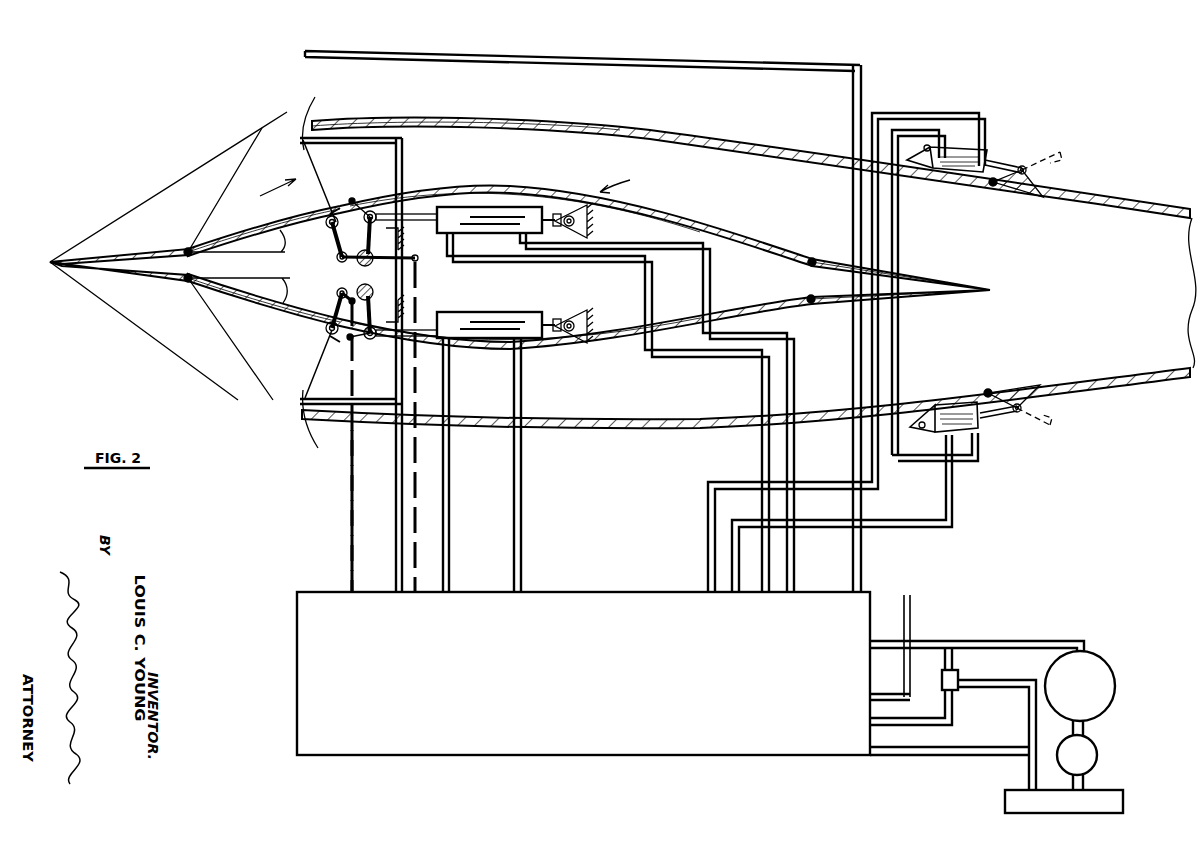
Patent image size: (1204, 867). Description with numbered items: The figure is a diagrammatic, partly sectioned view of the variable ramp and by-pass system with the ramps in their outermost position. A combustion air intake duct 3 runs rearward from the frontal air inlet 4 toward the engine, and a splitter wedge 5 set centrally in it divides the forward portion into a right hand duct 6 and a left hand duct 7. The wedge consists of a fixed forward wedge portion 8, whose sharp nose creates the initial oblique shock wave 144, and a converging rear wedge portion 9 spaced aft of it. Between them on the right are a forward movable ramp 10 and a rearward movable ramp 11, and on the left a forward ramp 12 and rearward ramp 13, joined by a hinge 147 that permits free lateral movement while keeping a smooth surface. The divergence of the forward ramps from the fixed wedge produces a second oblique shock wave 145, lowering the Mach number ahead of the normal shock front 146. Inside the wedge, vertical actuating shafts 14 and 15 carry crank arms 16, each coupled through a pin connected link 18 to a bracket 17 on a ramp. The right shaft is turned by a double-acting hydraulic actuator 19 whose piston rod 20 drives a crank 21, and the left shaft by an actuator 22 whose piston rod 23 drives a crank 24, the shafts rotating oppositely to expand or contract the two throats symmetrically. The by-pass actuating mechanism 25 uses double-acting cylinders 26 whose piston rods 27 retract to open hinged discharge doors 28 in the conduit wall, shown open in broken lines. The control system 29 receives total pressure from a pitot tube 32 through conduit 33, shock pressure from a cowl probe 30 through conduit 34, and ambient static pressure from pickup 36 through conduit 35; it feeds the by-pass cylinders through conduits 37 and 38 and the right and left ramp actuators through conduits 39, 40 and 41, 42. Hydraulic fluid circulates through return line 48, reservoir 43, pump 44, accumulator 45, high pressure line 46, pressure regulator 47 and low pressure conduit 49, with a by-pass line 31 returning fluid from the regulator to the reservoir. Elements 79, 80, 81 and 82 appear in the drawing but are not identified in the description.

The combustion air intake duct 3 is at (745, 136).
The frontal air inlet 4 is at (281, 272).
The splitter wedge 5 is at (589, 255).
The right hand duct 6 is at (545, 160).
The left hand duct 7 is at (595, 408).
The fixed forward wedge portion 8 is at (138, 256).
The rear wedge portion 9 is at (948, 296).
The forward movable right ramp portion 10 is at (282, 229).
The rearward movable right ramp portion 11 is at (628, 217).
The forward movable left ramp portion 12 is at (240, 303).
The rearward movable left ramp portion 13 is at (606, 347).
The right ramp actuating shaft 14 is at (362, 248).
The left ramp actuating shaft 15 is at (400, 292).
The crank arm 16 is at (345, 265).
The bracket 17 is at (326, 228).
The pin connected link 18 is at (338, 238).
The right double-acting hydraulic actuator 19 is at (487, 231).
The piston rod 20 is at (396, 232).
The crank 21 is at (400, 246).
The left double-acting hydraulic actuator 22 is at (497, 317).
The piston rod 23 is at (425, 328).
The crank 24 is at (364, 340).
The by-pass actuating mechanism 25 is at (995, 270).
The double-acting cylinders 26 is at (958, 175).
The piston rods 27 is at (1001, 161).
The discharge doors 28 is at (1034, 199).
The control system 29 is at (556, 603).
The shock sensing probe 30 is at (300, 143).
The by-pass line 31 is at (1028, 713).
The pitot tube 32 is at (309, 51).
The pneumatic sensing conduit 33 is at (613, 58).
The pneumatic sensing conduit 34 is at (396, 530).
The pneumatic sensing conduit 35 is at (906, 672).
The ambient static pressure pickup 36 is at (912, 608).
The by-pass actuator hydraulic conduit 37 is at (706, 526).
The by-pass actuator hydraulic conduit 38 is at (870, 522).
The right ramp actuator conduit 39 is at (762, 450).
The right ramp actuator conduit 40 is at (790, 467).
The left ramp actuator conduit 41 is at (446, 514).
The left ramp actuator conduit 42 is at (520, 517).
The reservoir 43 is at (1102, 800).
The pump 44 is at (1098, 755).
The accumulator 45 is at (1109, 675).
The high pressure conduit line 46 is at (935, 641).
The pressure regulator 47 is at (960, 680).
The hydraulic return line 48 is at (911, 753).
The low pressure conduit 49 is at (914, 722).
The upper ramp position rod 79 is at (413, 487).
The lower ramp position rod 80 is at (349, 440).
The link pivot 81 is at (420, 262).
The lower link pivot 82 is at (347, 299).
The initial oblique shock wave 144 is at (148, 200).
The second oblique compression shock wave 145 is at (215, 207).
The normal shock front 146 is at (316, 170).
The hinge 147 is at (353, 198).